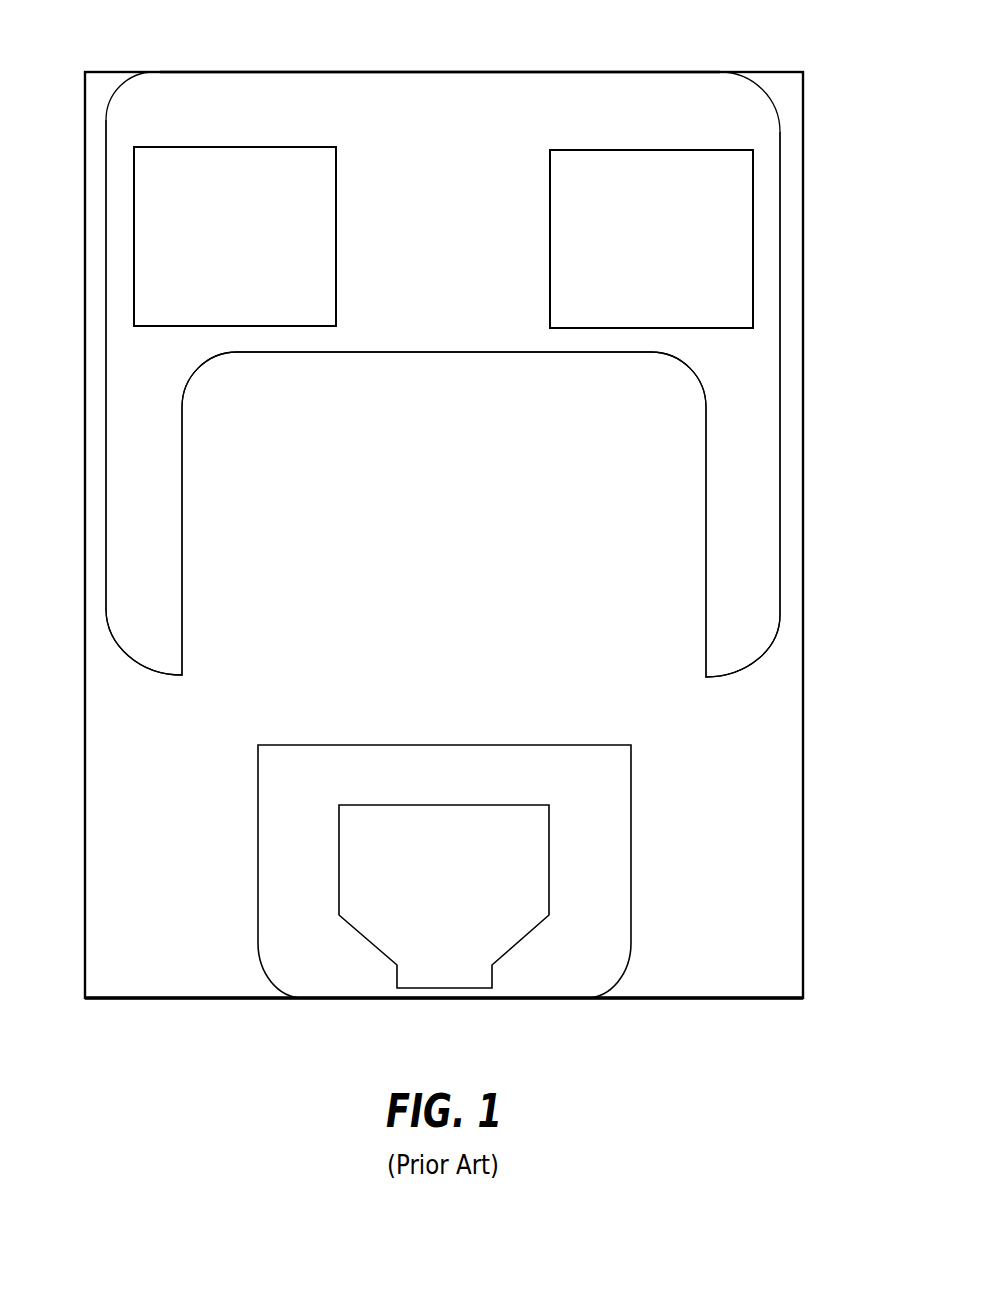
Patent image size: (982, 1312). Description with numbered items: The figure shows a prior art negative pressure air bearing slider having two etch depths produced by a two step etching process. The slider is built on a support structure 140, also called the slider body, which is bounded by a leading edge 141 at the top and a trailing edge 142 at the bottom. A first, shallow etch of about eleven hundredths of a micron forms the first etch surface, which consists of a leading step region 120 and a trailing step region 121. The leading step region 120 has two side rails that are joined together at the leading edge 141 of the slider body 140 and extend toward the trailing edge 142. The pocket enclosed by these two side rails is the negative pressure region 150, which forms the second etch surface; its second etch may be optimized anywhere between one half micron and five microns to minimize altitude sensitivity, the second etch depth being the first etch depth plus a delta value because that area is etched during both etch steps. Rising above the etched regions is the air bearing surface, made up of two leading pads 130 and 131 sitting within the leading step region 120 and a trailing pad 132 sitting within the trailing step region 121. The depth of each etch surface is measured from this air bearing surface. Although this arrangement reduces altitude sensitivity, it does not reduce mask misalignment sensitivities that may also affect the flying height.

The leading step region 120 is at (770, 547).
The trailing step region 121 is at (620, 843).
The leading pad 130 is at (212, 239).
The leading pad 131 is at (637, 242).
The trailing pad 132 is at (421, 910).
The support structure 140 is at (792, 229).
The leading edge 141 is at (615, 72).
The trailing edge 142 is at (159, 1000).
The negative pressure region 150 is at (409, 607).